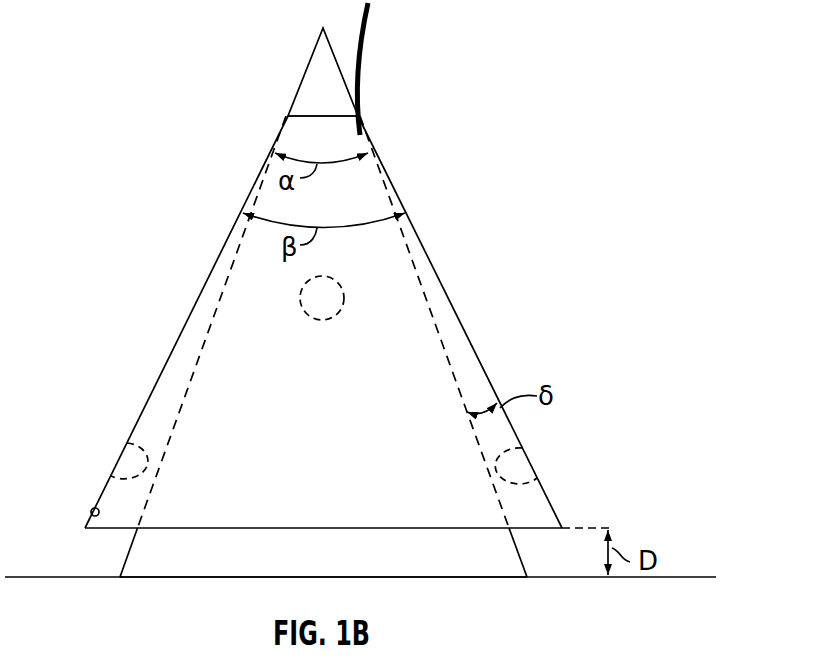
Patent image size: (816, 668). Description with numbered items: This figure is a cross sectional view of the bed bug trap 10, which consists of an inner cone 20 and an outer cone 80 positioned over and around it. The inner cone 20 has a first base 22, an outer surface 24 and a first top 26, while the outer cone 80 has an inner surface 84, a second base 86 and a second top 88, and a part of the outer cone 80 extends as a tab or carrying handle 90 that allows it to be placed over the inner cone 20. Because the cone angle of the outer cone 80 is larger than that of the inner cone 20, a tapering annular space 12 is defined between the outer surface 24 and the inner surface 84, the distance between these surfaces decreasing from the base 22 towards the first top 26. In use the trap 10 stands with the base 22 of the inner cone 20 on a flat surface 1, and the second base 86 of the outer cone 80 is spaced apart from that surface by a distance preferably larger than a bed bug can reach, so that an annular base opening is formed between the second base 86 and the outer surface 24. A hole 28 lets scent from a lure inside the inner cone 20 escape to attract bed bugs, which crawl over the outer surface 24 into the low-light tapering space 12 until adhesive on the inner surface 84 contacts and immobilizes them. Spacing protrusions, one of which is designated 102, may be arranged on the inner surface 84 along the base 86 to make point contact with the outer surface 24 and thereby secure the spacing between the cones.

The flat surface 1 is at (668, 577).
The trap 10 is at (214, 158).
The tapering annular space 12 is at (160, 392).
The inner cone 20 is at (129, 546).
The first base 22 is at (196, 578).
The outer surface 24 is at (495, 562).
The first top 26 is at (308, 61).
The hole 28 is at (314, 318).
The outer cone 80 is at (462, 322).
The inner surface 84 is at (91, 511).
The second base 86 is at (534, 531).
The second top 88 is at (289, 115).
The carrying handle 90 is at (356, 64).
The protrusion 102 is at (513, 465).